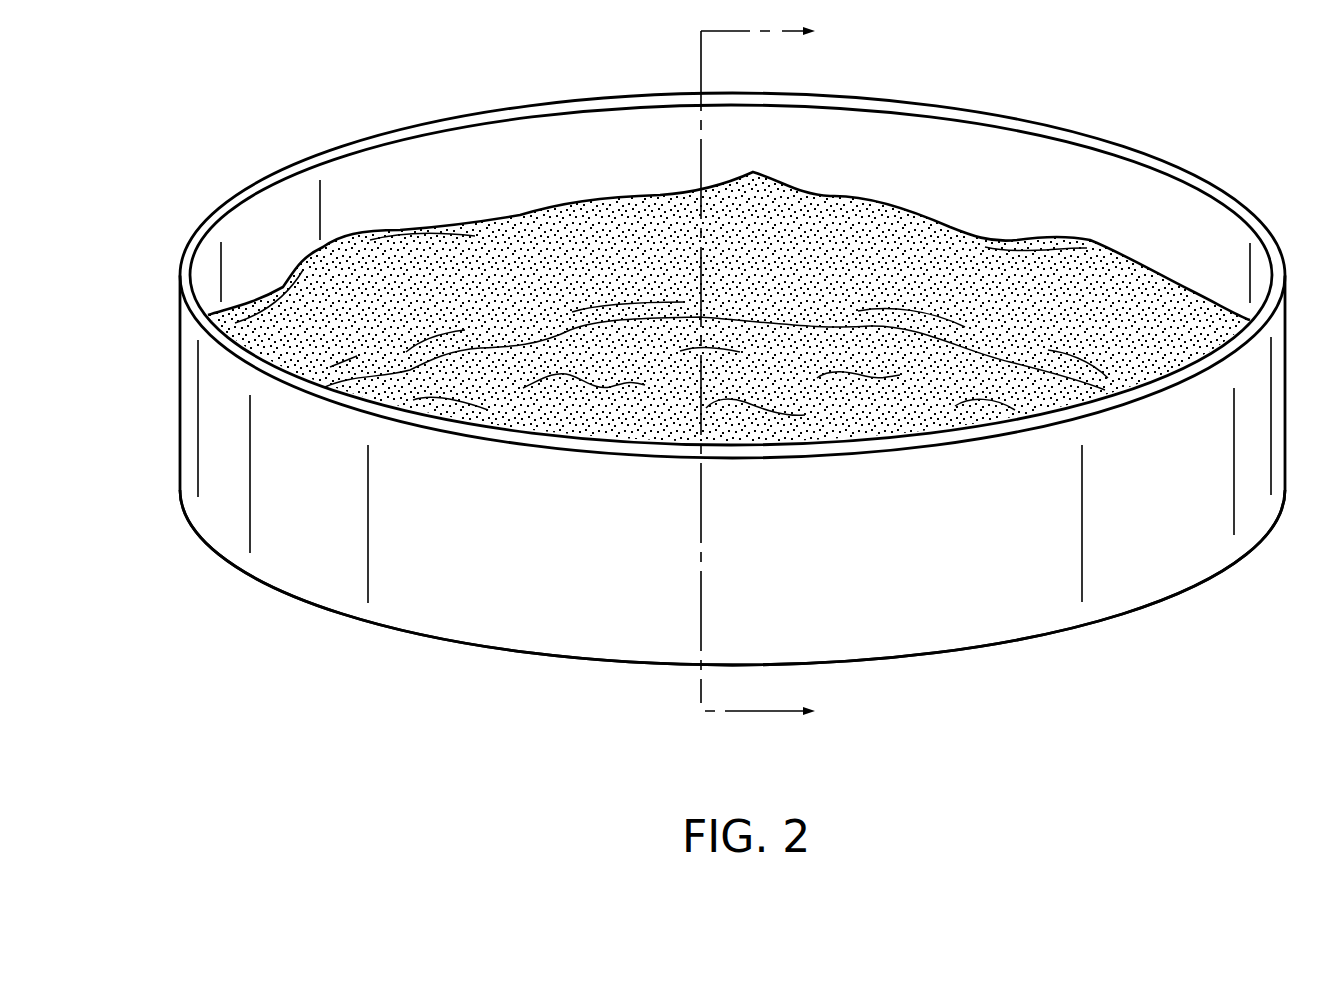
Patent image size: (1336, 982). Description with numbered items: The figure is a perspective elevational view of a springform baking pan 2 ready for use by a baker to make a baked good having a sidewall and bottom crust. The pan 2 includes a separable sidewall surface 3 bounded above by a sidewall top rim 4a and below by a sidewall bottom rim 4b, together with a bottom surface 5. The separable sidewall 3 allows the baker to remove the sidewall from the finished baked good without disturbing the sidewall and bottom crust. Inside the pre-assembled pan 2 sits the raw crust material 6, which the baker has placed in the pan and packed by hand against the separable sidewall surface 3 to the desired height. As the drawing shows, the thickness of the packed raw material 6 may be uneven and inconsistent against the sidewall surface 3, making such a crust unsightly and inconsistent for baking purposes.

The springform baking pan 2 is at (180, 405).
The separable sidewall surface 3 is at (1225, 253).
The sidewall top rim 4a is at (320, 160).
The sidewall bottom rim 4b is at (213, 545).
The bottom surface 5 is at (1170, 648).
The raw crust material 6 is at (302, 325).